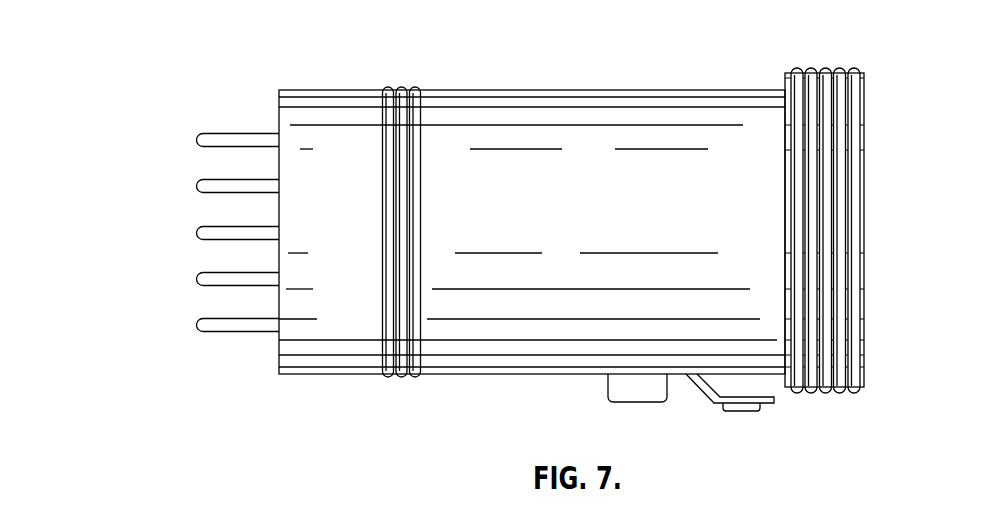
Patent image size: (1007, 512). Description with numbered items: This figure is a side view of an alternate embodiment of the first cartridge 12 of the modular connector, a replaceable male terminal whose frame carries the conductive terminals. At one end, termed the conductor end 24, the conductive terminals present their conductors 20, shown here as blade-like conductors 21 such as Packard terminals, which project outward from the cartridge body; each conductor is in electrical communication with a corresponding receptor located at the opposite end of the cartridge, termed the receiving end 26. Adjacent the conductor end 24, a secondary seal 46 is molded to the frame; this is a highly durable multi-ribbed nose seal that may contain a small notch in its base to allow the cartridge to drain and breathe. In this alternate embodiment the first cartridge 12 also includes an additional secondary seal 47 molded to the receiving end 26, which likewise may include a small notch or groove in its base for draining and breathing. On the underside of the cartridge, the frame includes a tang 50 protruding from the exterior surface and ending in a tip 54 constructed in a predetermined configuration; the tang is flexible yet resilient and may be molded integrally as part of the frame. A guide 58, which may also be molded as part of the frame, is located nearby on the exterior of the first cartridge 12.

The conductor 20 is at (114, 213).
The blade-like conductor 21 is at (205, 134).
The conductor end 24 is at (295, 90).
The first cartridge 12 is at (518, 72).
The secondary seal 46 is at (413, 90).
The additional secondary seal 47 is at (837, 70).
The receiving end 26 is at (865, 207).
The guide 58 is at (637, 402).
The tang 50 is at (723, 407).
The tip 54 is at (758, 412).